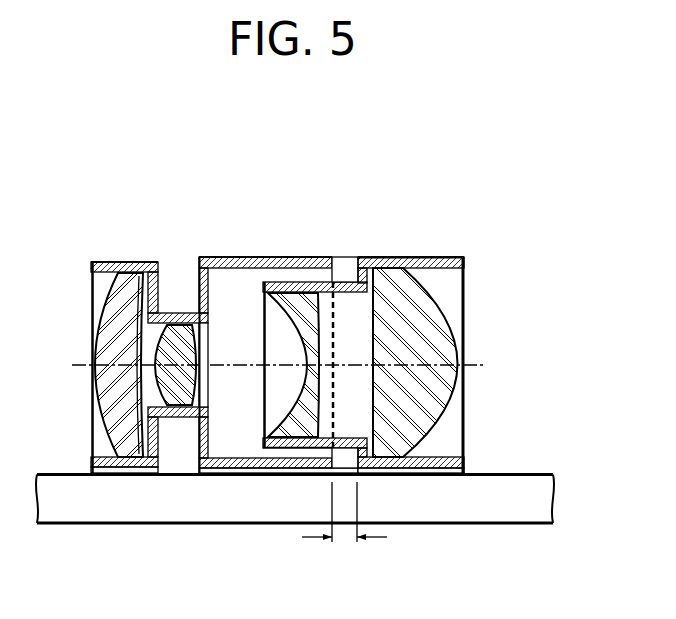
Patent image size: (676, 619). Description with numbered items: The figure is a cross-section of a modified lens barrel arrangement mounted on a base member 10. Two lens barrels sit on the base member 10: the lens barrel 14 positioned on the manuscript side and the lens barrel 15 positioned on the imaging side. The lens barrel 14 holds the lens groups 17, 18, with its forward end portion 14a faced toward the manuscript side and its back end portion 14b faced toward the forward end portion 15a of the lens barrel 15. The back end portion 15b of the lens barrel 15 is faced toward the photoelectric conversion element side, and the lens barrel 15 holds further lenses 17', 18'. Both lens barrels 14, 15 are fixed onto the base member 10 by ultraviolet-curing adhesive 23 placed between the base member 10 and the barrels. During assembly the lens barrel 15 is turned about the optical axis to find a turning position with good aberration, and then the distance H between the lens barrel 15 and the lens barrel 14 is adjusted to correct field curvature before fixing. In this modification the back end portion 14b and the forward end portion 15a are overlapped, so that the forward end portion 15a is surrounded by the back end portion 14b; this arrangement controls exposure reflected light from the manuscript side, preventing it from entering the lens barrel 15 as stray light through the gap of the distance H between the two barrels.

The base member 10 is at (523, 515).
The lens barrel 14 is at (222, 328).
The forward end portion 14a is at (118, 262).
The back end portion 14b is at (322, 257).
The lens barrel 15 is at (389, 376).
The forward end portion 15a is at (287, 448).
The back end portion 15b is at (450, 257).
The lens group 17 is at (83, 365).
The lens of second holder 17' is at (456, 362).
The lens group 18 is at (205, 366).
The lens of holding portion 18' is at (322, 365).
The ultraviolet-curing adhesive 23 is at (122, 474).
The distance H is at (342, 542).